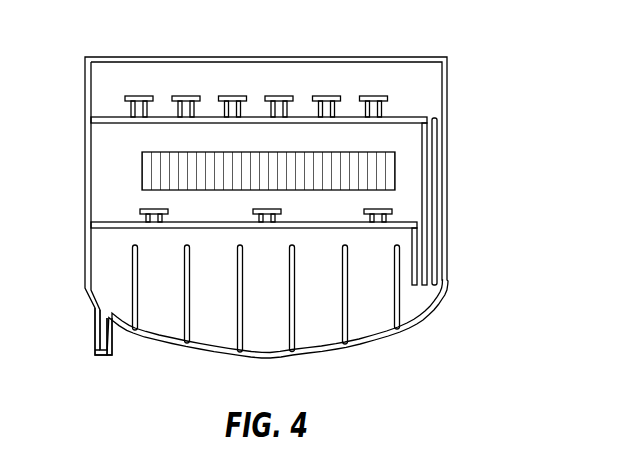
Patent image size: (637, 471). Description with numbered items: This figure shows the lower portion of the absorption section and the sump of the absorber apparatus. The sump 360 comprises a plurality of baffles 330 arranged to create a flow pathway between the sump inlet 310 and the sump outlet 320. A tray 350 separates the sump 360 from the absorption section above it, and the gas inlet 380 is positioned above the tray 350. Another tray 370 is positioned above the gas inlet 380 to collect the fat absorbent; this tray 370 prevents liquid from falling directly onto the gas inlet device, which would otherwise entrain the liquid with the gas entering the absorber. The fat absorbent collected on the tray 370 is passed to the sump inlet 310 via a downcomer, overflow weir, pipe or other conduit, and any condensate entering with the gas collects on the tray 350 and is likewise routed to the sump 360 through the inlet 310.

The sump inlet 310 is at (437, 258).
The sump outlet 320 is at (94, 328).
The baffles 330 is at (290, 334).
The tray 350 is at (110, 221).
The sump 360 is at (397, 337).
The tray 370 is at (252, 117).
The gas inlet 380 is at (141, 172).